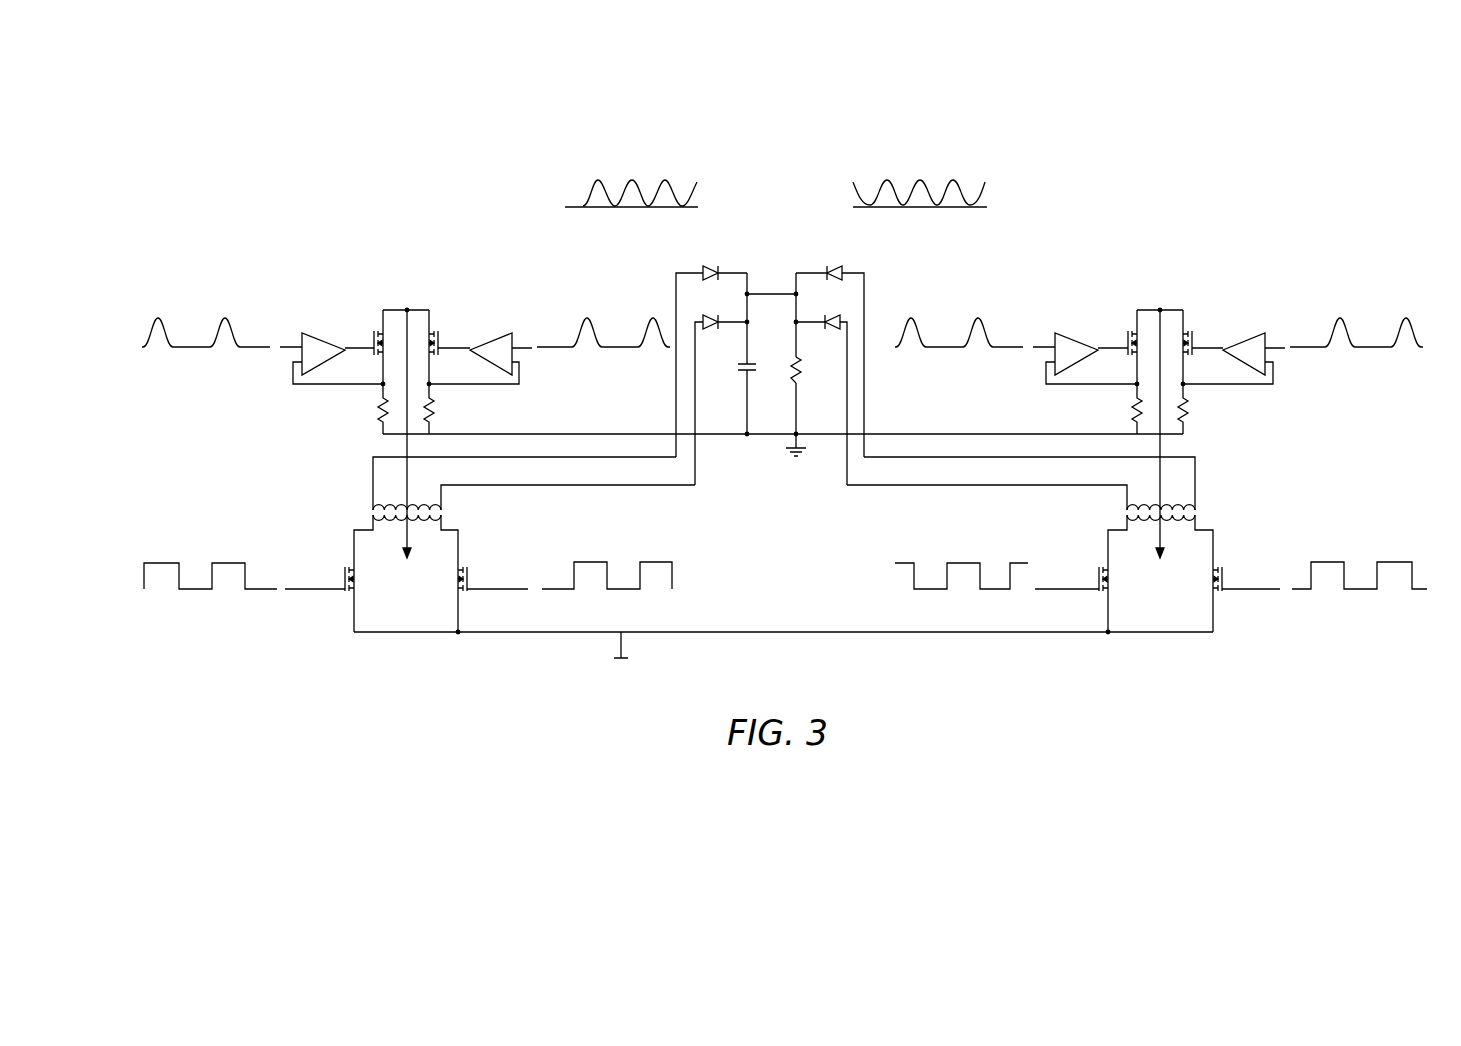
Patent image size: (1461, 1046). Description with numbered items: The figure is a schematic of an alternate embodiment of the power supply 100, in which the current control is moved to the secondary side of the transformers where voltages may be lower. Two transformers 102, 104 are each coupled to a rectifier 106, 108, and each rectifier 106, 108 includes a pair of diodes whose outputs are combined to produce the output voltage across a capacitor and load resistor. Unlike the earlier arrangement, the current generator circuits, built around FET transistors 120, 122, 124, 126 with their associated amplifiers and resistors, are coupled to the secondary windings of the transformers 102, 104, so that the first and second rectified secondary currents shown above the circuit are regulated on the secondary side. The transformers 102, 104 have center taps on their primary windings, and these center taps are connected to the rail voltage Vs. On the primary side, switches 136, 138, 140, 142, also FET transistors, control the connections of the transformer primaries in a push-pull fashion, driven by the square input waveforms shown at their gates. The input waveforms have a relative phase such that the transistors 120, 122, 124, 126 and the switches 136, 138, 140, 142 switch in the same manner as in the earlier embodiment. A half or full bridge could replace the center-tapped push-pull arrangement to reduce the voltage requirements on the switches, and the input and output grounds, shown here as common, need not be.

The power supply 100 is at (784, 454).
The transformer 102 is at (373, 514).
The transformer 104 is at (1195, 517).
The rectifier 106 is at (676, 293).
The rectifier 108 is at (864, 287).
The FET transistor 120 is at (372, 336).
The FET transistor 122 is at (443, 342).
The FET transistor 124 is at (1127, 340).
The FET transistor 126 is at (1197, 342).
The FET transistor 136 is at (343, 578).
The FET transistor 138 is at (471, 578).
The FET transistor 140 is at (1099, 577).
The FET transistor 142 is at (1223, 575).